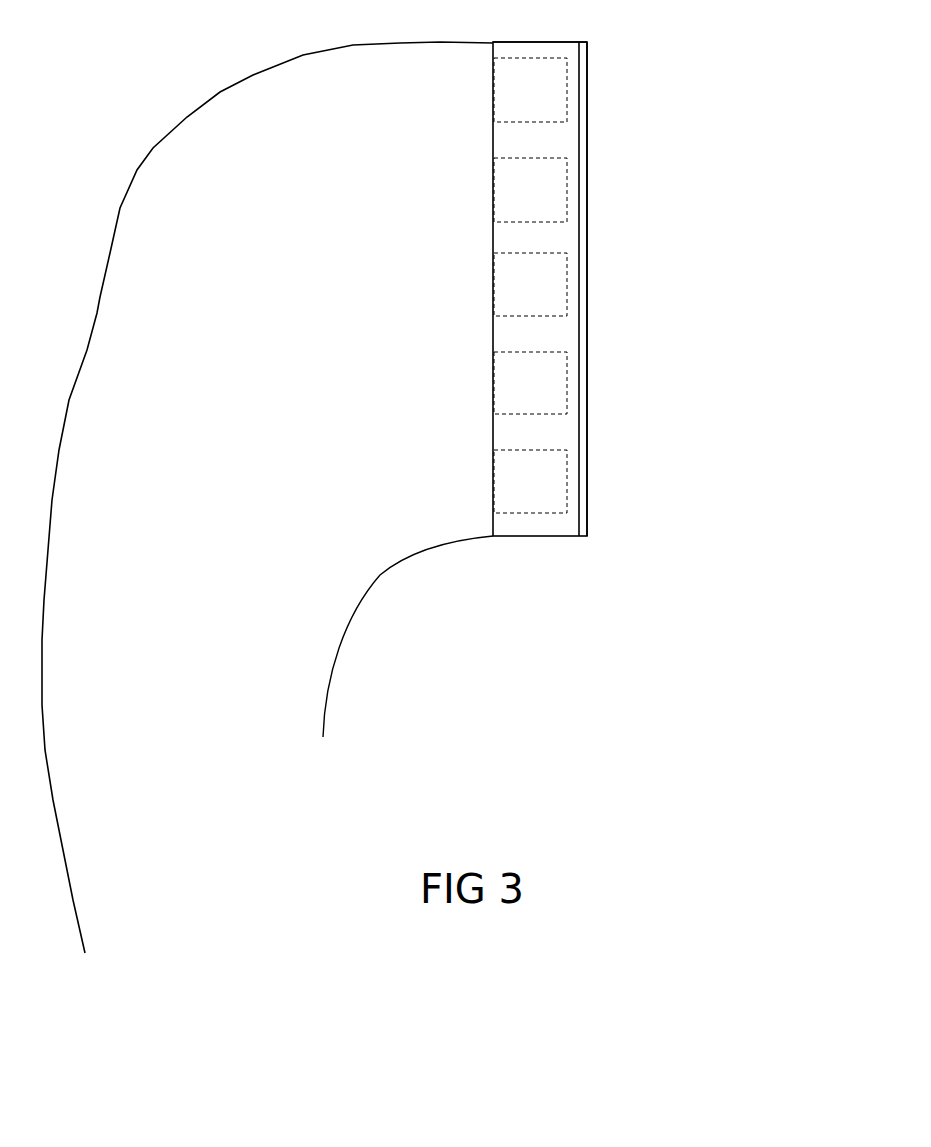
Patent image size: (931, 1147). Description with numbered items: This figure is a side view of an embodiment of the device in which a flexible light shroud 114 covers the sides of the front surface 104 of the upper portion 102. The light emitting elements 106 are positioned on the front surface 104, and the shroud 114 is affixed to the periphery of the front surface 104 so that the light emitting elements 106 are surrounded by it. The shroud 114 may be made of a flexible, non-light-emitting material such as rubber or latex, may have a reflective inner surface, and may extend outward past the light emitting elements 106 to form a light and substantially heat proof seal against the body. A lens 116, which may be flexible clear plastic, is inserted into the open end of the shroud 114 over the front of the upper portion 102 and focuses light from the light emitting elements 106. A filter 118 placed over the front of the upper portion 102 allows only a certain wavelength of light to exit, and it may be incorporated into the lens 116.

The upper portion 102 is at (373, 484).
The front surface 104 is at (493, 522).
The light emitting elements 106 is at (565, 180).
The flexible light shroud 114 is at (541, 35).
The lens 116 is at (592, 441).
The filter 118 is at (659, 289).